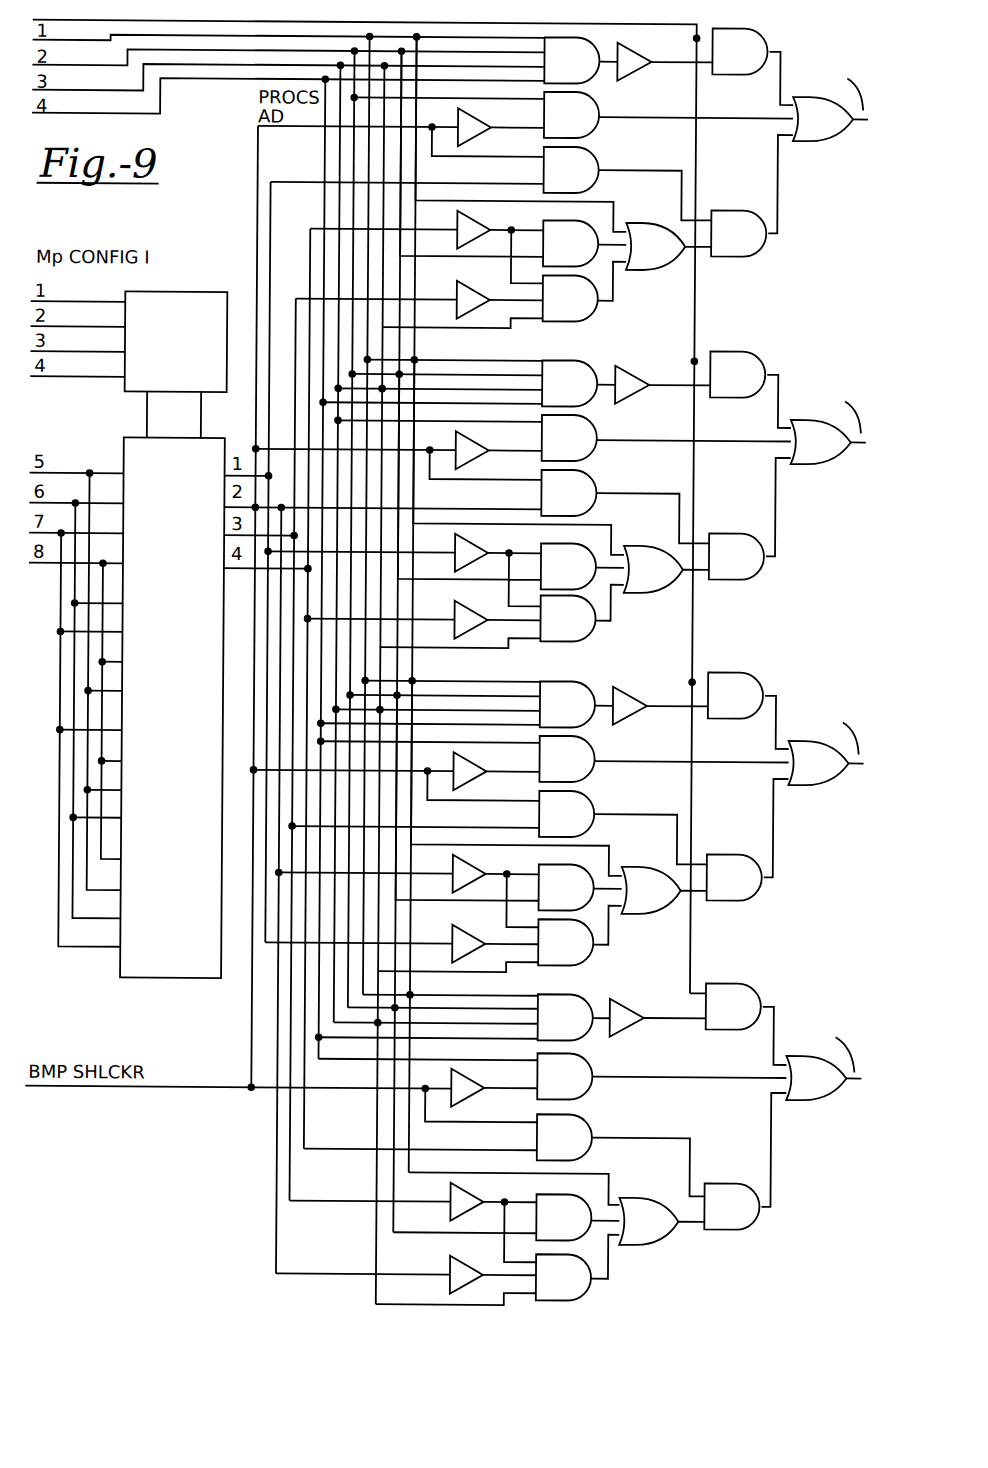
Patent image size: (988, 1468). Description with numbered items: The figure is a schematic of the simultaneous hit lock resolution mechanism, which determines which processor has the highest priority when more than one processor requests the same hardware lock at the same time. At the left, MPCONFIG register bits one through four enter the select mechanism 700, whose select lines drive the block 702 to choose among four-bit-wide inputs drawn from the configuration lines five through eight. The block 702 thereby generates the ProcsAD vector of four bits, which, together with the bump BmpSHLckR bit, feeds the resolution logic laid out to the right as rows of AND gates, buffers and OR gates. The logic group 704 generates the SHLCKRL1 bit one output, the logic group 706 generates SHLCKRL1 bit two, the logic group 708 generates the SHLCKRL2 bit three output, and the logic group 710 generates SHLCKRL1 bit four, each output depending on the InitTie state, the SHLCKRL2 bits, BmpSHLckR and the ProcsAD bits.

The select mechanism 700 is at (171, 292).
The block 702 is at (125, 451).
The logic group 704 is at (863, 18).
The logic group 706 is at (863, 340).
The logic group 708 is at (863, 662).
The logic group 710 is at (863, 982).